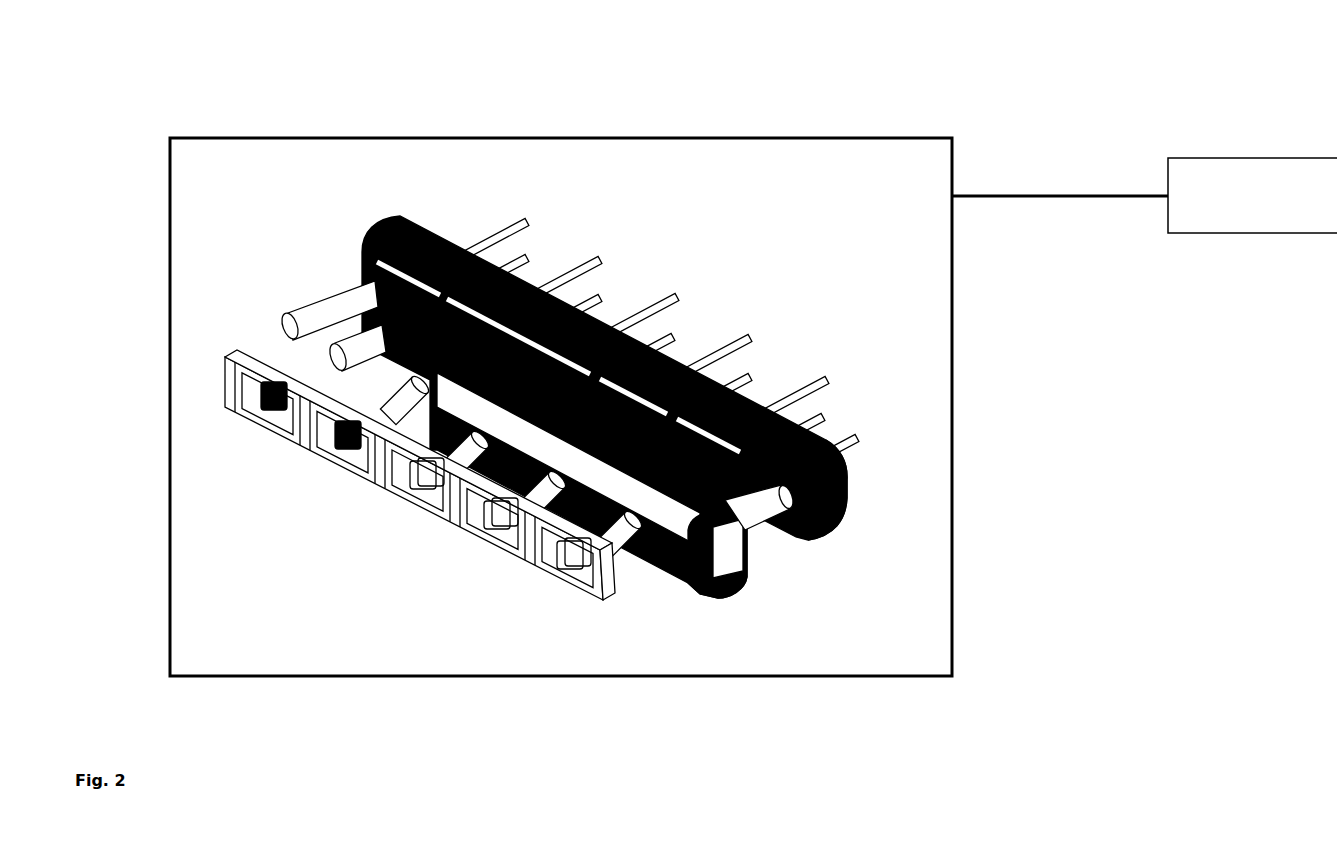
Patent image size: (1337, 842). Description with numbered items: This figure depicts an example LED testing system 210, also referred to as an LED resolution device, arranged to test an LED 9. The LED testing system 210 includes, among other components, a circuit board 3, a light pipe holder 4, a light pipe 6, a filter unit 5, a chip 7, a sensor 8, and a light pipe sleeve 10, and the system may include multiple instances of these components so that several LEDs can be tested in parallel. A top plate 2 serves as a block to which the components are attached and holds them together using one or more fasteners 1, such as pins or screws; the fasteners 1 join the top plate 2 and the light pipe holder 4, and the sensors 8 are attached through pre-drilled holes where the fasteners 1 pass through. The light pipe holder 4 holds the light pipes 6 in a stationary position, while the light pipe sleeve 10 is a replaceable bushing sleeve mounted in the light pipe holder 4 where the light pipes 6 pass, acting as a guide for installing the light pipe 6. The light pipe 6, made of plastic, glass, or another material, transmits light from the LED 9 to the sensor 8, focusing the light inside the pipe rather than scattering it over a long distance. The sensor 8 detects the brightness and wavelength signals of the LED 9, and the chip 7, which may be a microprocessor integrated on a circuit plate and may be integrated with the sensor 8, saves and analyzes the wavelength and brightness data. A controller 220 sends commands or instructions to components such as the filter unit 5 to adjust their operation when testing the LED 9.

The fasteners 1 is at (753, 520).
The top plate 2 is at (843, 484).
The circuit board 3 is at (367, 282).
The light pipe holder 4 is at (663, 577).
The filter unit 5 is at (540, 272).
The light pipe 6 is at (307, 372).
The chip 7 is at (450, 237).
The sensor 8 is at (378, 232).
The LED 9 is at (423, 480).
The light pipe sleeve 10 is at (362, 345).
The LED testing system 210 is at (147, 87).
The controller 220 is at (1268, 158).